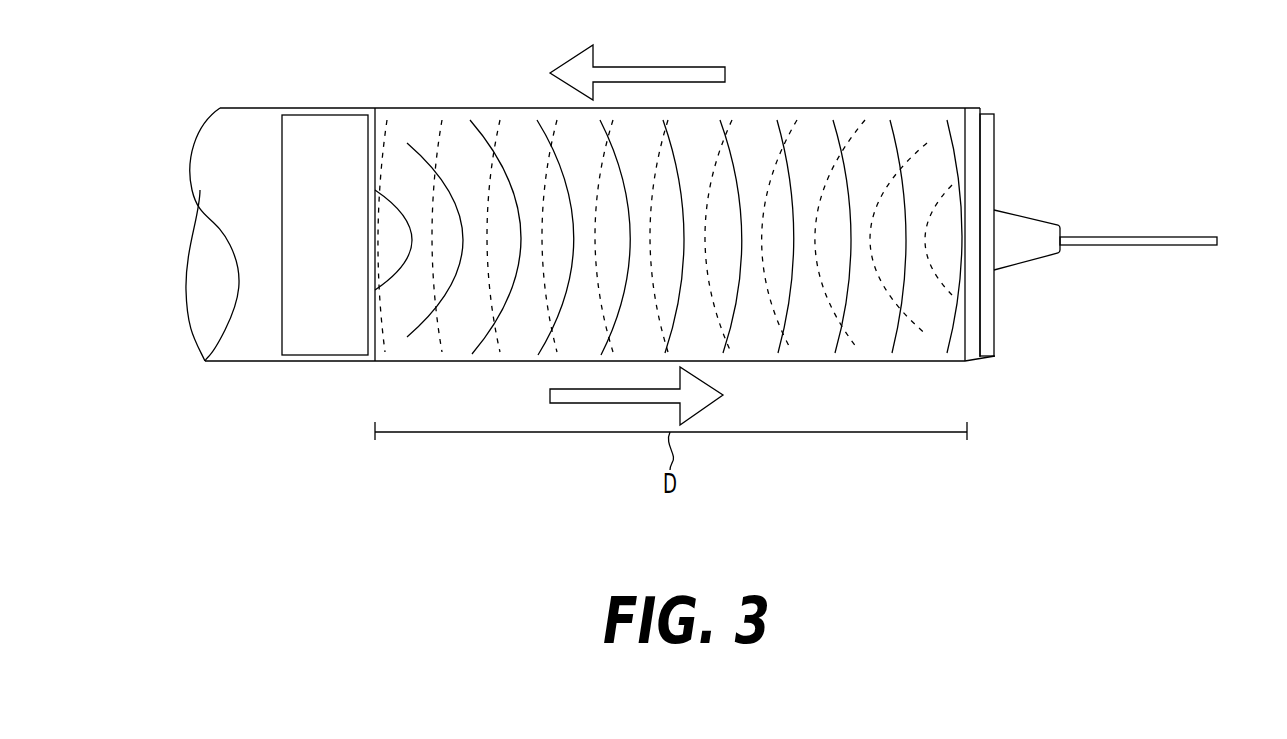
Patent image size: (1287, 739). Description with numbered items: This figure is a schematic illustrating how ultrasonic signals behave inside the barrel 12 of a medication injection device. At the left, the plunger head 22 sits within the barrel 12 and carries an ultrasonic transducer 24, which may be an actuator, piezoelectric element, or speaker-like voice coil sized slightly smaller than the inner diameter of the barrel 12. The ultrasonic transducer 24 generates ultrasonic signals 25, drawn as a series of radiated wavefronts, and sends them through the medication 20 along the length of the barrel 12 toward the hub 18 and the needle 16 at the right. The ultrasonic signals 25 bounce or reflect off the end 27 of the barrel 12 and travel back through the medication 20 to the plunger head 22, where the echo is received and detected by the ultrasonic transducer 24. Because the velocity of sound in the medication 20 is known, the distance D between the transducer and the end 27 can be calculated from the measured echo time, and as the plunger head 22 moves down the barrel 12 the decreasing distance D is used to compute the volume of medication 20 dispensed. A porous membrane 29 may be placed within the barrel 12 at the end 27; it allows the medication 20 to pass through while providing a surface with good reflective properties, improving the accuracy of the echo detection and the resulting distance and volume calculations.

The barrel 12 is at (828, 108).
The needle 16 is at (1173, 237).
The hub 18 is at (1020, 213).
The medication 20 is at (403, 134).
The plunger head 22 is at (250, 265).
The ultrasonic transducer 24 is at (314, 242).
The ultrasonic signals 25 is at (472, 122).
The end of barrel 27 is at (993, 130).
The porous membrane 29 is at (986, 113).